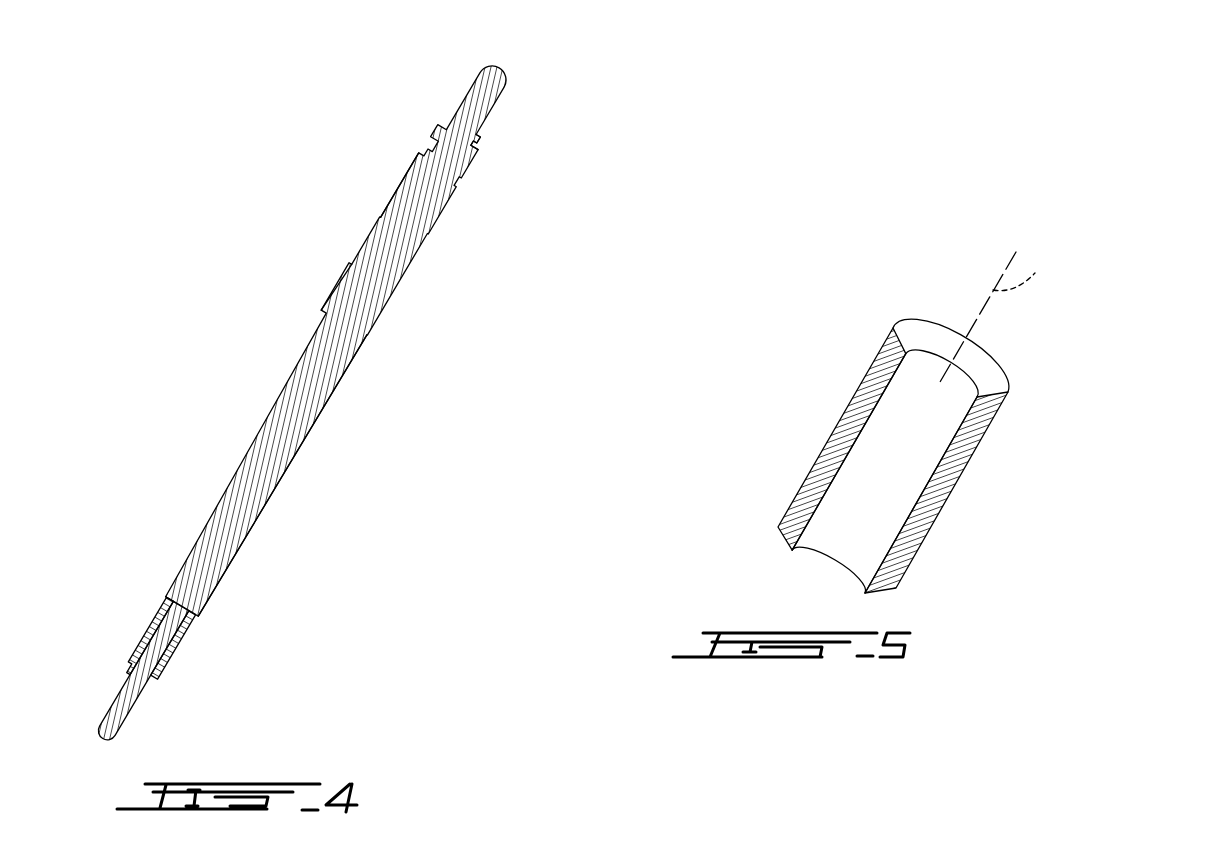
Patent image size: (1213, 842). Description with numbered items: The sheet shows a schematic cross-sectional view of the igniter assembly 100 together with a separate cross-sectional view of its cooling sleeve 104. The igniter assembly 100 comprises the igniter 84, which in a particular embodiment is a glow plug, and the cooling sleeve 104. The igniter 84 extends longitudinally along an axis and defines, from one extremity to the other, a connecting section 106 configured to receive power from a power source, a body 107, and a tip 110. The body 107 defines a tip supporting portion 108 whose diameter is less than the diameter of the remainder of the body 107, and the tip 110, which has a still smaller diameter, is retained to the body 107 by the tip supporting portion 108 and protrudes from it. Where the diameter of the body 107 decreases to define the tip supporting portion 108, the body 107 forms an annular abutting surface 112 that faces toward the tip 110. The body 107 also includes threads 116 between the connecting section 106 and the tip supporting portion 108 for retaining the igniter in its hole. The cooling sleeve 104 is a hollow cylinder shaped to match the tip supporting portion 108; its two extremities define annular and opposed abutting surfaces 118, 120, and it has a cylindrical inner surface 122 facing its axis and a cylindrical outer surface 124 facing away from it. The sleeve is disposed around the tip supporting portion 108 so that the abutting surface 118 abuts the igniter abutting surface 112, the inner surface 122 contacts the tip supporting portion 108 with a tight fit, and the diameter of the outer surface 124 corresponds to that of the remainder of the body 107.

In FIG. 4, the igniter assembly 100 is at (355, 383).
In FIG. 4, the igniter 84 is at (316, 437).
In FIG. 4, the cooling sleeve 104 is at (207, 638).
In FIG. 5, the cooling sleeve 104 is at (926, 423).
In FIG. 4, the connecting section 106 is at (491, 147).
In FIG. 4, the body 107 is at (233, 558).
In FIG. 4, the tip supporting portion 108 is at (140, 647).
In FIG. 4, the tip 110 is at (130, 710).
In FIG. 4, the annular abutting surface 112 is at (151, 600).
In FIG. 4, the threads 116 is at (385, 313).
In FIG. 5, the abutting surface 118 is at (928, 341).
In FIG. 5, the abutting surface 120 is at (759, 568).
In FIG. 5, the inner surface 122 is at (908, 443).
In FIG. 5, the outer surface 124 is at (1005, 385).